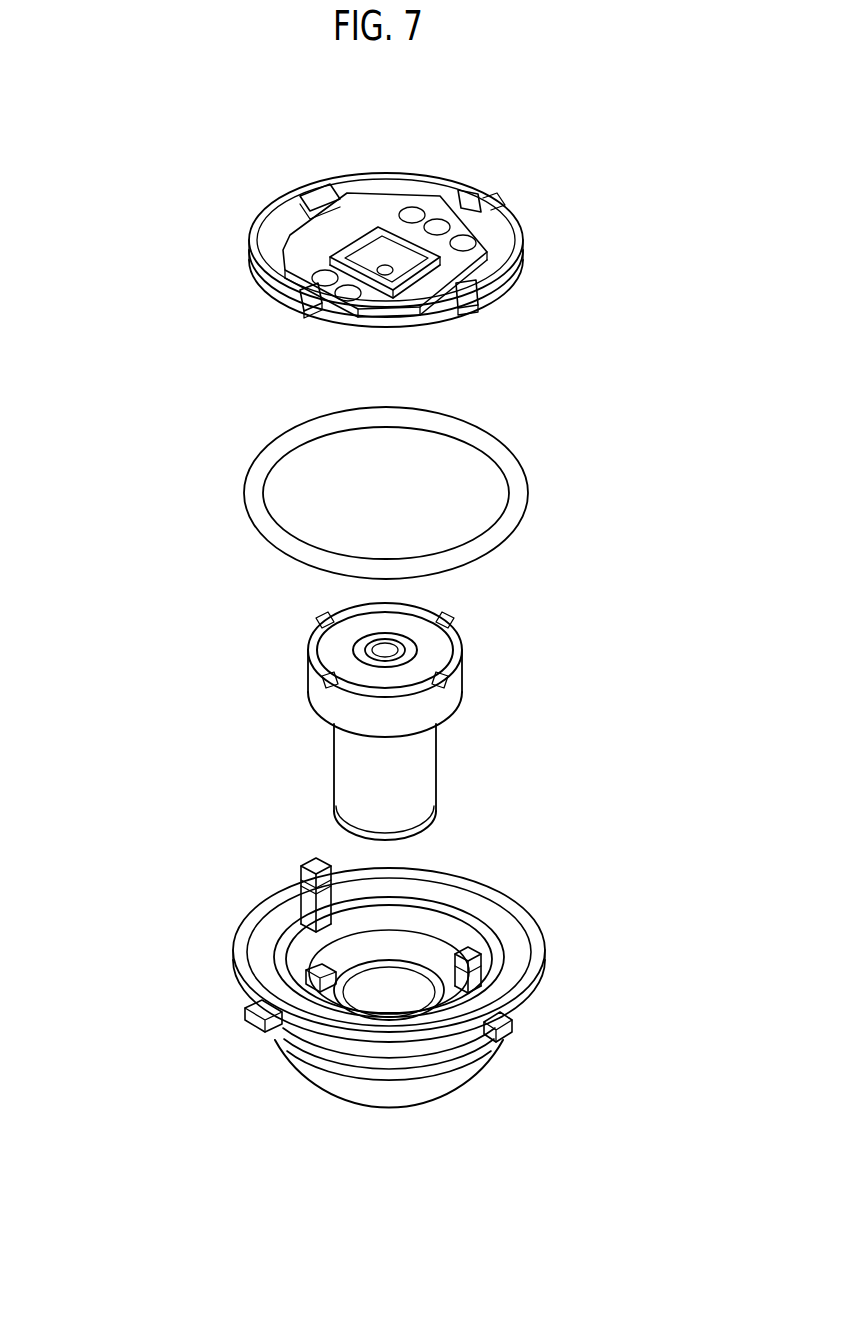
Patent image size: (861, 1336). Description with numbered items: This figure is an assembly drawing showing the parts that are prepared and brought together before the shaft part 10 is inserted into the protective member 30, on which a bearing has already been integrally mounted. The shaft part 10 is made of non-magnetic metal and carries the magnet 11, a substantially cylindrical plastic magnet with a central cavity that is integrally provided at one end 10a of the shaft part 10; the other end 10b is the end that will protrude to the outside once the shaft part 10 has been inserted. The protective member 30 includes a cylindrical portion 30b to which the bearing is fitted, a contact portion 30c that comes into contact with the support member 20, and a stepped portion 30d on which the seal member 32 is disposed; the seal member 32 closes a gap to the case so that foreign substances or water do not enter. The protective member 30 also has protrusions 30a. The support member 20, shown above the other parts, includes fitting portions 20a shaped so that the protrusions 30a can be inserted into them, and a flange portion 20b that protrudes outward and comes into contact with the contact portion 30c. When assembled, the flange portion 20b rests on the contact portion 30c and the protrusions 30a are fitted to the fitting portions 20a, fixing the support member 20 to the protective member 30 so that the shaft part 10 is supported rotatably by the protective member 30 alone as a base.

The shaft part 10 is at (410, 722).
The one end of the shaft part 10a is at (462, 680).
The other end of the shaft part 10b is at (436, 833).
The magnet 11 is at (347, 663).
The support member 20 is at (378, 218).
The fitting portions 20a is at (297, 205).
The flange portion 20b is at (272, 225).
The protective member 30 is at (394, 998).
The protrusions 30a is at (302, 875).
The cylindrical portion 30b is at (338, 1080).
The contact portion 30c is at (475, 948).
The stepped portion 30d is at (298, 977).
The seal member 32 is at (545, 513).